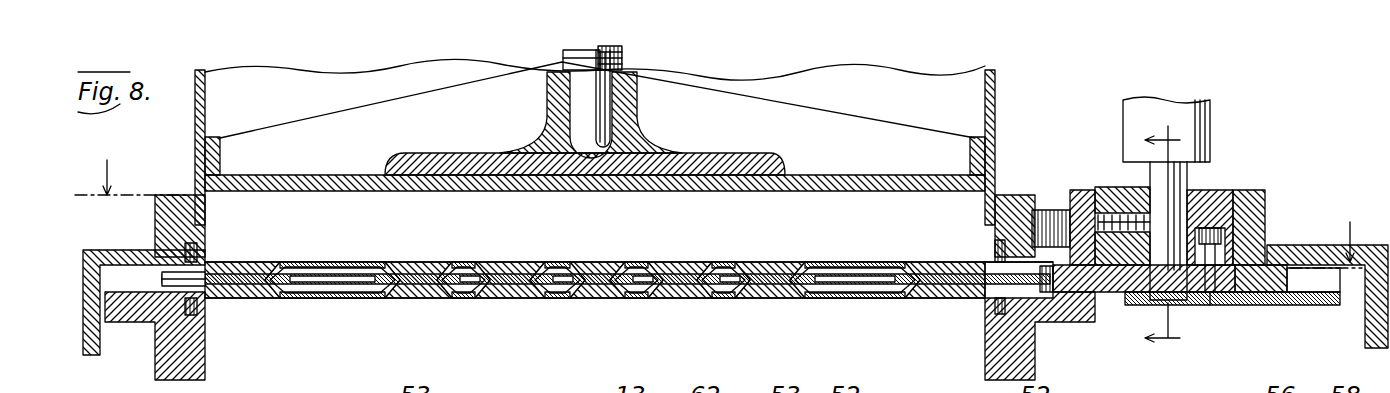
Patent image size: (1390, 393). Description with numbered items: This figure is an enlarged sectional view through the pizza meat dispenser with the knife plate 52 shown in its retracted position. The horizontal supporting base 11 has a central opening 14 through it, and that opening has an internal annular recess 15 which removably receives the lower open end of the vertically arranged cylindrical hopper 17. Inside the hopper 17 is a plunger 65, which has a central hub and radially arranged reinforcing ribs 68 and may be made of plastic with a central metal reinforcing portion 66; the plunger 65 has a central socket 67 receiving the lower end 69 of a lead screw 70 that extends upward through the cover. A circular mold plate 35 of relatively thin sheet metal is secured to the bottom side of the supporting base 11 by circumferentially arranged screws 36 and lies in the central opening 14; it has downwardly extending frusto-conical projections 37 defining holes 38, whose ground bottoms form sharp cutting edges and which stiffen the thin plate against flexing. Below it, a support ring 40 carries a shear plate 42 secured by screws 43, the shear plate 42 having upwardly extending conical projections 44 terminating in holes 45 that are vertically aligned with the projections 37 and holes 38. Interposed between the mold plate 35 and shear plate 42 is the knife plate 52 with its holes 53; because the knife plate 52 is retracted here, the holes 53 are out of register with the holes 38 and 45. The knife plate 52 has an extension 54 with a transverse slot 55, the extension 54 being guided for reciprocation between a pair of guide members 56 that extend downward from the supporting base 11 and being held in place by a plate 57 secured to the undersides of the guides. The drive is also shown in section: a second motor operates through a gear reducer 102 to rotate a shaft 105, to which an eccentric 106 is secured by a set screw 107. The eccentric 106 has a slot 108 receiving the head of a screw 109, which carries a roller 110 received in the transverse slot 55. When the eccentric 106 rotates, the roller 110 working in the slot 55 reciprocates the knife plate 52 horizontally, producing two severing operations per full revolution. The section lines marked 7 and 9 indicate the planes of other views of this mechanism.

The section line arrow 7 is at (1162, 236).
The section line 9 is at (718, 200).
The supporting base 11 is at (160, 197).
The central opening 14 is at (205, 240).
The internal annular recess 15 is at (205, 215).
The cylindrical hopper 17 is at (195, 123).
The mold plate 35 is at (322, 262).
The screws 36 is at (175, 256).
The frusto-conical projections 37 is at (405, 262).
The holes 38 is at (436, 266).
The support ring 40 is at (155, 362).
The shear plate 42 is at (323, 300).
The screws 43 is at (202, 313).
The conical projections 44 is at (402, 300).
The holes 45 is at (437, 285).
The knife plate 52 is at (508, 262).
The holes 53 is at (465, 285).
The extension 54 is at (1112, 280).
The transverse slot 55 is at (1222, 292).
The guide members 56 is at (1303, 278).
The plate 57 is at (1310, 305).
The plunger 65 is at (302, 177).
The central metal reinforcing portion 66 is at (556, 163).
The central socket 67 is at (578, 116).
The reinforcing ribs 68 is at (393, 120).
The lower end 69 is at (607, 117).
The lead screw 70 is at (562, 58).
The gear reducer 102 is at (1202, 113).
The shaft 105 is at (1187, 178).
The eccentric 106 is at (1230, 170).
The set screw 107 is at (1128, 205).
The slot 108 is at (1240, 197).
The screw 109 is at (1255, 240).
The roller 110 is at (1202, 290).